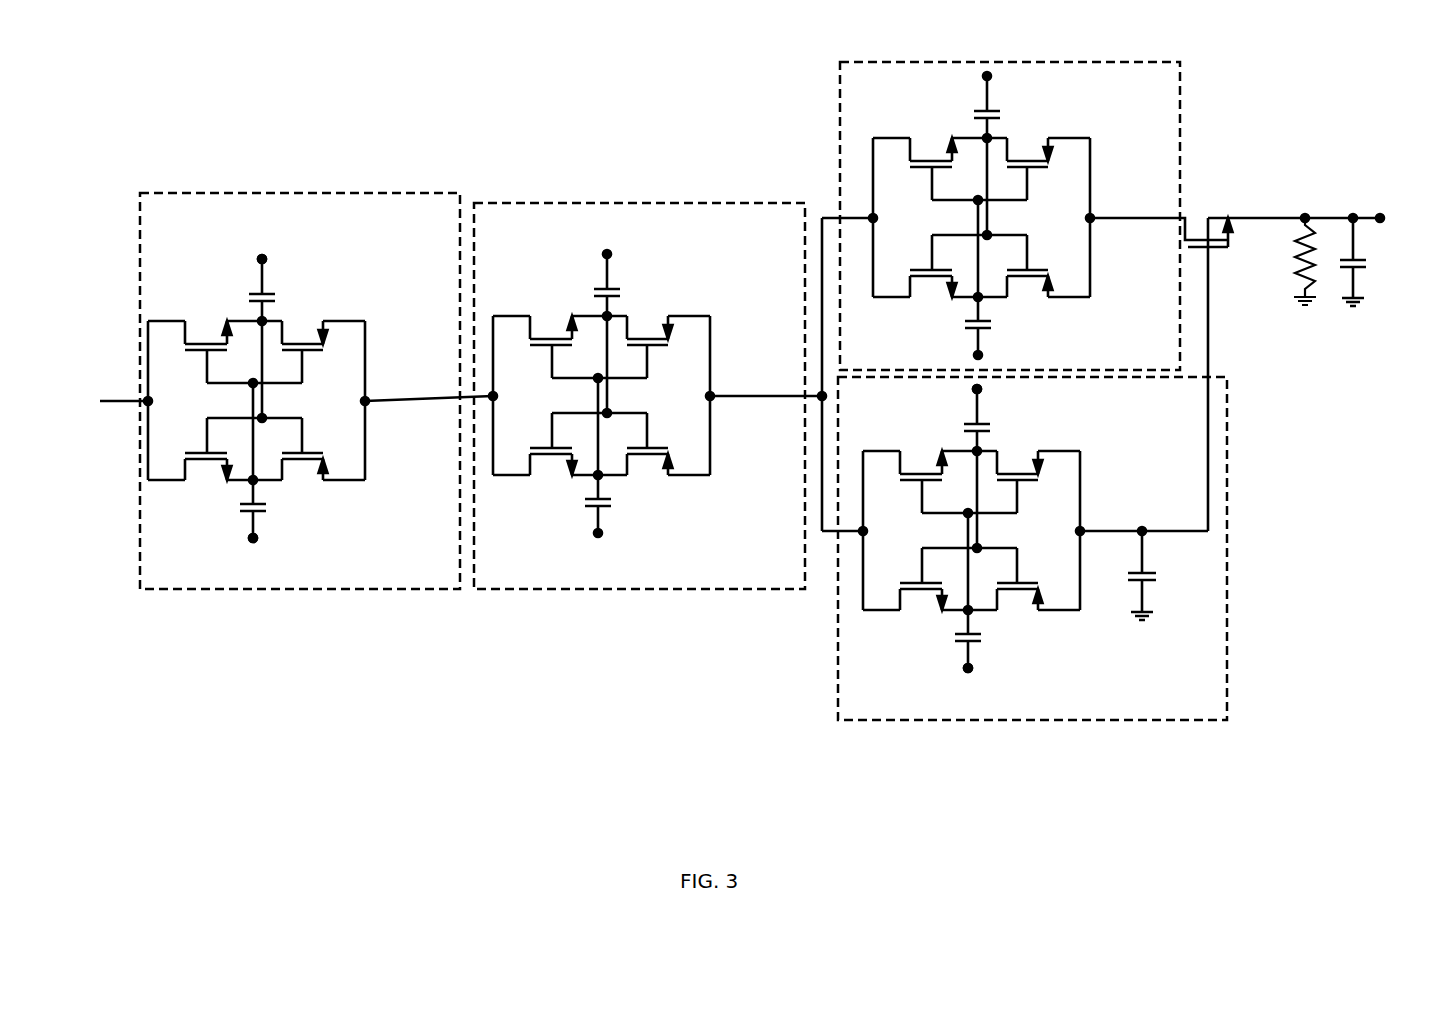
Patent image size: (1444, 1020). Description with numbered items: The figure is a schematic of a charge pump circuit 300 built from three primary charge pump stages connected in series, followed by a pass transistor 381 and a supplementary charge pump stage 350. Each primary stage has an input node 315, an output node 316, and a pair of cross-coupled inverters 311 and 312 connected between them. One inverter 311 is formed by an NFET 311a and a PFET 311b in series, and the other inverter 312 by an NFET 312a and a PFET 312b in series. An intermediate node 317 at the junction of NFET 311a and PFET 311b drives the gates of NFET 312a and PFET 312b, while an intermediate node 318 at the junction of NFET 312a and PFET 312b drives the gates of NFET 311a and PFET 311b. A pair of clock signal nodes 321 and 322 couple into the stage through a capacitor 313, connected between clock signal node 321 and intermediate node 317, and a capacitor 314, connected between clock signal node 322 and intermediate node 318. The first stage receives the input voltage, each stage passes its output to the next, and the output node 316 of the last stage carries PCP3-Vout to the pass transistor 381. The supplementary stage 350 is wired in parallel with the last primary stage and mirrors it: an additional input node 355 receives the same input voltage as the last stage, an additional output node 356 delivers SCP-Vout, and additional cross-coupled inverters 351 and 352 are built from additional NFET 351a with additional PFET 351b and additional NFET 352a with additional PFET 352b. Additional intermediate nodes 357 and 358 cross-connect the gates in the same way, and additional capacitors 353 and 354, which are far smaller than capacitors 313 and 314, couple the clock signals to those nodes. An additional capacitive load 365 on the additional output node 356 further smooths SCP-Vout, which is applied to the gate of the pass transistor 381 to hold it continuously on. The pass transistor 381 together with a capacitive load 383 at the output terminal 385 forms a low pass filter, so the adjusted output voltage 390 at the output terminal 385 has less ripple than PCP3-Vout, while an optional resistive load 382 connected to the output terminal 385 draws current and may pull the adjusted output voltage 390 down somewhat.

The charge pump circuit 300 is at (1325, 93).
The inverter 311 is at (295, 336).
The NFET 311a is at (193, 354).
The PFET 311b is at (321, 354).
The inverter 312 is at (293, 448).
The NFET 312a is at (193, 447).
The PFET 312b is at (321, 447).
The capacitor 313 is at (238, 269).
The capacitor 314 is at (231, 538).
The input node 315 is at (152, 400).
The output node 316 is at (389, 400).
The intermediate node 317 is at (238, 338).
The intermediate node 318 is at (279, 460).
The clock signal node 321 is at (289, 257).
The clock signal node 322 is at (283, 546).
The supplementary charge pump stage 350 is at (1032, 548).
The additional inverter 351 is at (1014, 448).
The additional NFET 351a is at (905, 485).
The additional PFET 351b is at (1035, 485).
The additional inverter 352 is at (1012, 607).
The additional NFET 352a is at (905, 575).
The additional PFET 352b is at (1035, 575).
The additional capacitor 353 is at (952, 401).
The additional capacitor 354 is at (945, 666).
The additional input node 355 is at (889, 530).
The additional output node 356 is at (1100, 530).
The additional intermediate node 357 is at (954, 468).
The additional intermediate node 358 is at (993, 590).
The additional capacitive load 365 is at (1148, 572).
The pass transistor 381 is at (1218, 250).
The resistive load 382 is at (1298, 292).
The capacitive load 383 is at (1360, 258).
The output terminal 385 is at (1381, 214).
The adjusted output voltage 390 is at (1265, 181).